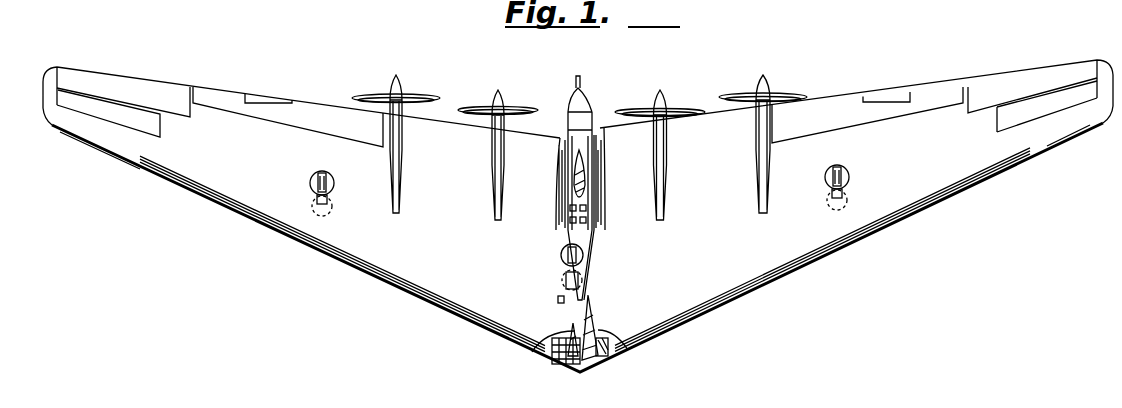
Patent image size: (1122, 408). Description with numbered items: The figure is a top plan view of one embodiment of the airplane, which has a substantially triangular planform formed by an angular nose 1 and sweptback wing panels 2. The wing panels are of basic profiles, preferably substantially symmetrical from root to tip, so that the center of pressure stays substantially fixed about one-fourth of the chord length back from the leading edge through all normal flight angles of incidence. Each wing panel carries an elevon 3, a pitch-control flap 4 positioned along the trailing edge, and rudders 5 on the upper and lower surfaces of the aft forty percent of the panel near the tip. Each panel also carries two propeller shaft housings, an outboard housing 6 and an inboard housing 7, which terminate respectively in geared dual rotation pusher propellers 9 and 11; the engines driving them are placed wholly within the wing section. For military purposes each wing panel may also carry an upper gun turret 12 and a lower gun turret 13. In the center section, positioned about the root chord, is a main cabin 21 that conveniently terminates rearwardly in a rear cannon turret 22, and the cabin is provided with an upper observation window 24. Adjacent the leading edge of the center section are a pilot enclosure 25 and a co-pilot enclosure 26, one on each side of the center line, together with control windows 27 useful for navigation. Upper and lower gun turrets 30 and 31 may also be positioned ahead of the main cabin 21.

The angular nose 1 is at (581, 375).
The sweptback wing panels 2 is at (444, 246).
The elevon 3 is at (230, 92).
The pitch-control flap 4 is at (152, 82).
The rudders 5 is at (108, 112).
The outboard housing 6 is at (402, 146).
The inboard housing 7 is at (492, 181).
The geared dual rotation pusher propellers 9 is at (353, 98).
The geared dual rotation pusher propellers 11 is at (465, 112).
The upper gun turret 12 is at (315, 184).
The lower gun turret 13 is at (320, 217).
The main cabin 21 is at (596, 130).
The rear cannon turret 22 is at (568, 100).
The upper observation window 24 is at (585, 193).
The pilot enclosure 25 is at (630, 343).
The co-pilot enclosure 26 is at (552, 336).
The control windows 27 is at (566, 365).
The upper gun turret 30 is at (562, 252).
The lower gun turret 31 is at (562, 280).